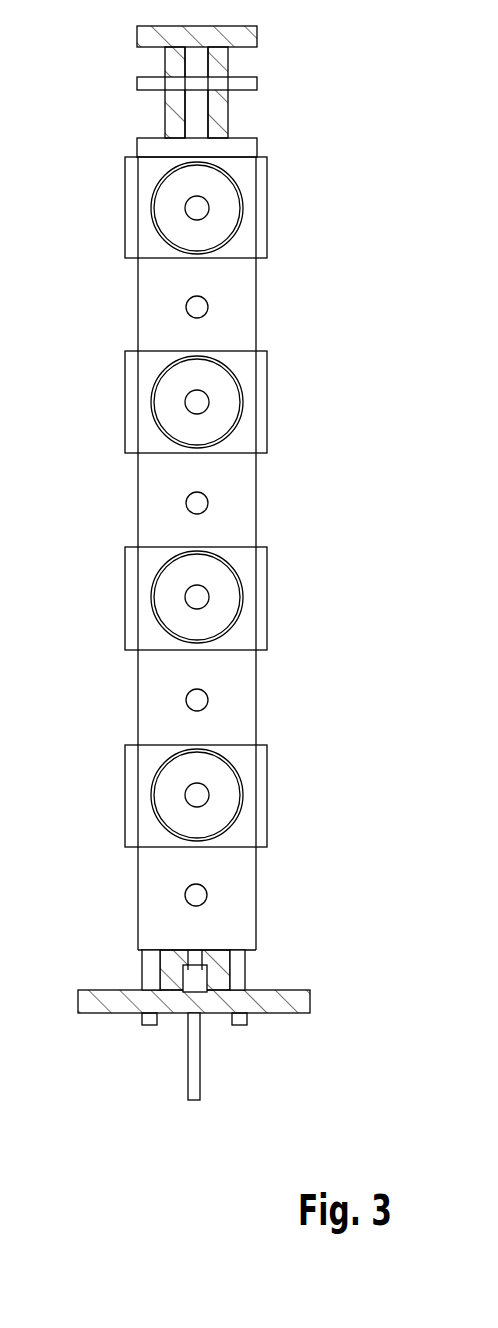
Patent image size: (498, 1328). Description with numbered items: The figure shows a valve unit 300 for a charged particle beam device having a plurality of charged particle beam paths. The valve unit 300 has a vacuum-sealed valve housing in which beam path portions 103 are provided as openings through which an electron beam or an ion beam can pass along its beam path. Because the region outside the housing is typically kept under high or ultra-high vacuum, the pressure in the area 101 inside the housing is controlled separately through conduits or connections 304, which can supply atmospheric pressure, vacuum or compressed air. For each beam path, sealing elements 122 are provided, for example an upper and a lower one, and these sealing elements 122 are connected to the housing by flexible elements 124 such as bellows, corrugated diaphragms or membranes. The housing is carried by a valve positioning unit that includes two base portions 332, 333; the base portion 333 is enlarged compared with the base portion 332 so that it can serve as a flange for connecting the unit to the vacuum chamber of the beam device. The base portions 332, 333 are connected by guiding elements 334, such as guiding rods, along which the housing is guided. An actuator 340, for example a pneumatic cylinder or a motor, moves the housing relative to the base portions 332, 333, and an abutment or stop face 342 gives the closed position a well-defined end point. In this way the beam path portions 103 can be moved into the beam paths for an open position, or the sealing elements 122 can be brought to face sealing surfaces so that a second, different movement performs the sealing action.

The valve unit 300 is at (205, 595).
The area within the valve housing 101 is at (188, 541).
The beam path portions 103 is at (207, 308).
The sealing elements 122 is at (230, 400).
The flexible elements 124 is at (243, 205).
The base portion 332 is at (252, 33).
The guiding elements 334 is at (232, 113).
The abutment or stop face 342 is at (243, 83).
The base portion 333 is at (92, 1006).
The conduits or connections 304 is at (148, 1025).
The actuator 340 is at (198, 1100).